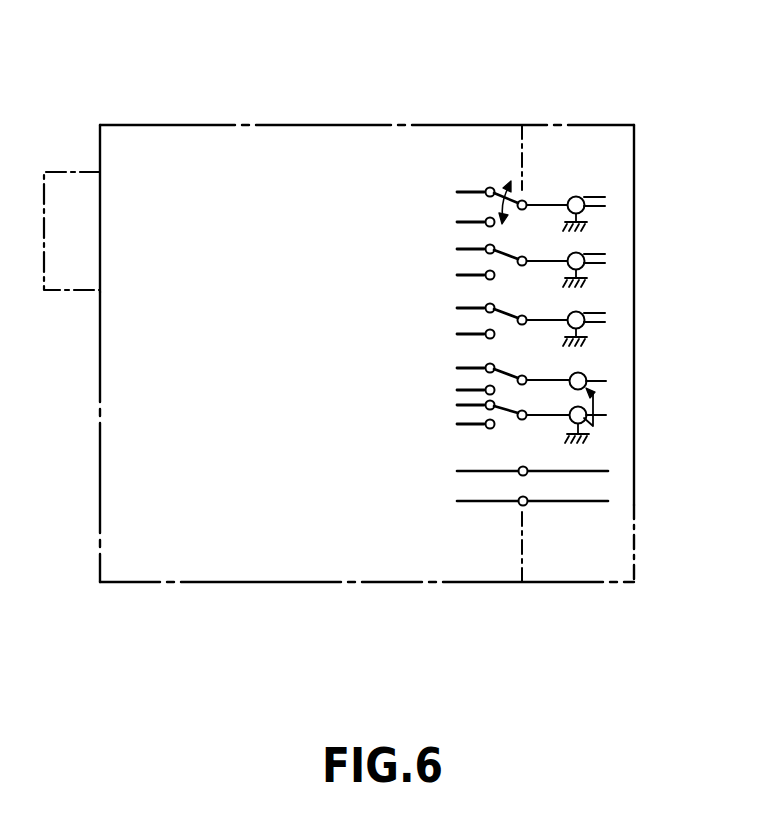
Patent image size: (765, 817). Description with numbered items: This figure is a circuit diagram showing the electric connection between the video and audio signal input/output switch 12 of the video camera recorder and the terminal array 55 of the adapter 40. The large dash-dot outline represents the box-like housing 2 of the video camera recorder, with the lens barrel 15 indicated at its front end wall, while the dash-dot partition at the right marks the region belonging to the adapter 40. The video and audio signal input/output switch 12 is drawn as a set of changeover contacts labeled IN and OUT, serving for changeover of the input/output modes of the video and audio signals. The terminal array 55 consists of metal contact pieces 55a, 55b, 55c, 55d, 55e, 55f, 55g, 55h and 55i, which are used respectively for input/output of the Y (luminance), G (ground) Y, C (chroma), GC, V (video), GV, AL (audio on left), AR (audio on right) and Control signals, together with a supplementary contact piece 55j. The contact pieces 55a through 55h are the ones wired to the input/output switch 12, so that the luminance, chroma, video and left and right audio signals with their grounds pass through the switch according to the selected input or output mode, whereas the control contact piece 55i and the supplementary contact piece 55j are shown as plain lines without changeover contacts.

The housing 2 is at (283, 126).
The video and audio signal input/output switch 12 is at (492, 187).
The lens barrel 15 is at (58, 172).
The adapter 40 is at (543, 122).
The terminal array 55 is at (580, 173).
The contact piece 55a is at (597, 196).
The contact piece 55b is at (605, 206).
The contact piece 55c is at (608, 254).
The contact piece 55d is at (608, 264).
The contact piece 55e is at (608, 313).
The contact piece 55f is at (608, 323).
The contact piece 55g is at (606, 381).
The contact piece 55h is at (606, 415).
The contact piece 55i is at (608, 471).
The supplementary contact piece 55j is at (608, 501).